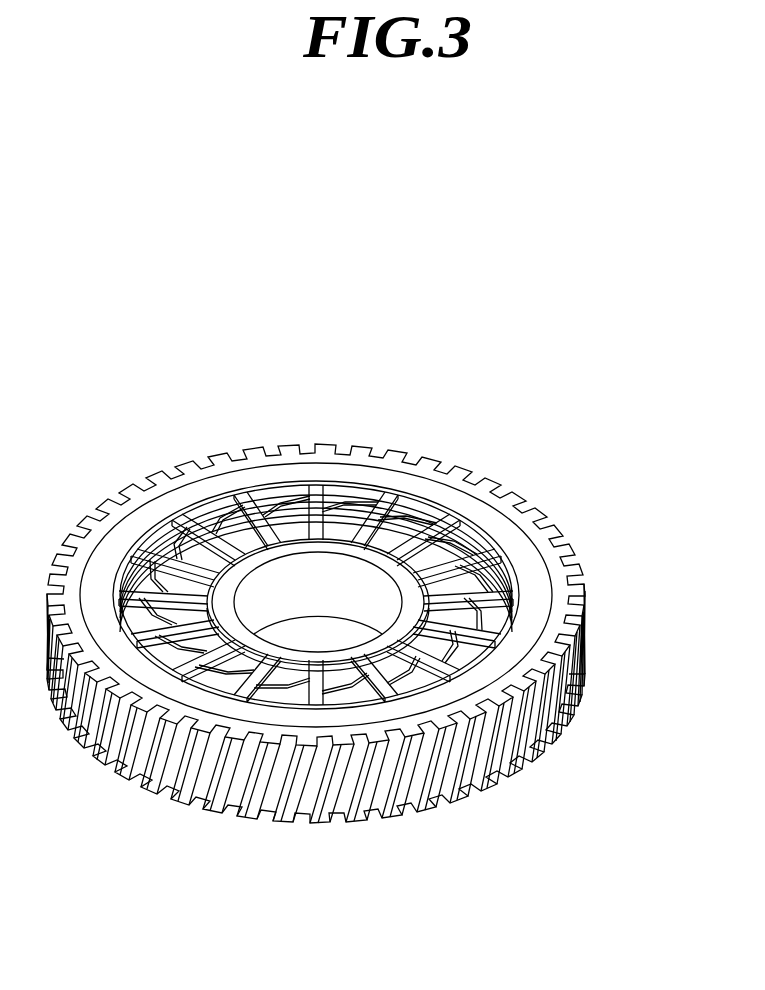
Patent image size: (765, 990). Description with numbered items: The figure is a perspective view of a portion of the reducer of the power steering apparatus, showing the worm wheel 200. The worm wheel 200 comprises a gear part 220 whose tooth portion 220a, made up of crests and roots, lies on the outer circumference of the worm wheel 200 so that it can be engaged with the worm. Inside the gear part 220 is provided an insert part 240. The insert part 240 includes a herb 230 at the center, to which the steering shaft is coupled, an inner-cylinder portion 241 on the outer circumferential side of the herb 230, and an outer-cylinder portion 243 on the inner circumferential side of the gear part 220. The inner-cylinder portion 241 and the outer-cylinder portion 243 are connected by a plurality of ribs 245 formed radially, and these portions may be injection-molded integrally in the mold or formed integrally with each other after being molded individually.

The worm wheel 200 is at (86, 352).
The gear part 220 is at (560, 598).
The tooth portion 220a is at (558, 650).
The herb 230 is at (380, 560).
The insert part 240 is at (642, 403).
The inner-cylinder portion 241 is at (445, 572).
The outer-cylinder portion 243 is at (533, 567).
The ribs 245 is at (420, 587).